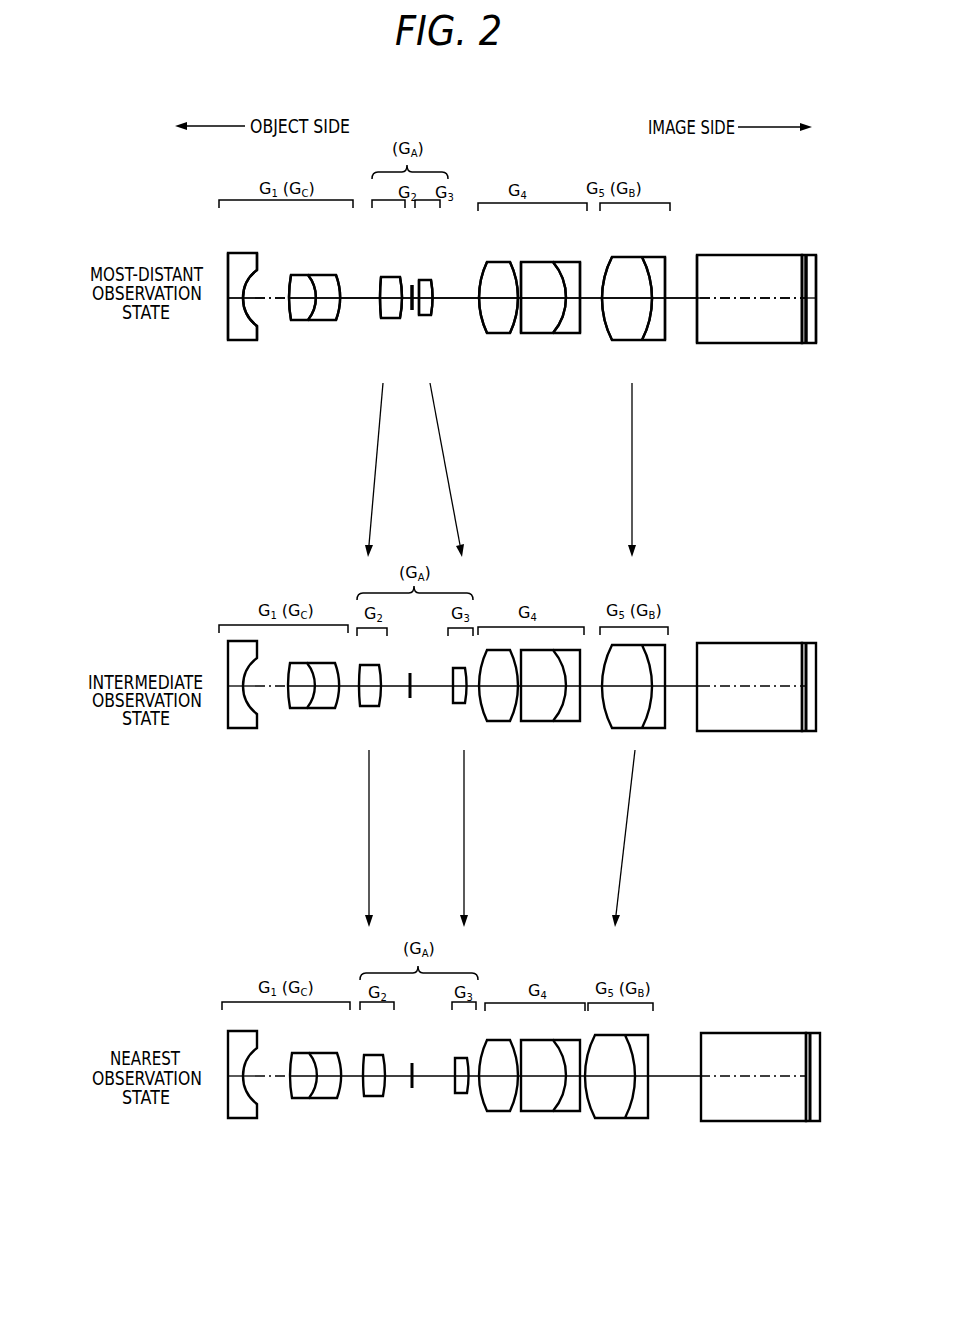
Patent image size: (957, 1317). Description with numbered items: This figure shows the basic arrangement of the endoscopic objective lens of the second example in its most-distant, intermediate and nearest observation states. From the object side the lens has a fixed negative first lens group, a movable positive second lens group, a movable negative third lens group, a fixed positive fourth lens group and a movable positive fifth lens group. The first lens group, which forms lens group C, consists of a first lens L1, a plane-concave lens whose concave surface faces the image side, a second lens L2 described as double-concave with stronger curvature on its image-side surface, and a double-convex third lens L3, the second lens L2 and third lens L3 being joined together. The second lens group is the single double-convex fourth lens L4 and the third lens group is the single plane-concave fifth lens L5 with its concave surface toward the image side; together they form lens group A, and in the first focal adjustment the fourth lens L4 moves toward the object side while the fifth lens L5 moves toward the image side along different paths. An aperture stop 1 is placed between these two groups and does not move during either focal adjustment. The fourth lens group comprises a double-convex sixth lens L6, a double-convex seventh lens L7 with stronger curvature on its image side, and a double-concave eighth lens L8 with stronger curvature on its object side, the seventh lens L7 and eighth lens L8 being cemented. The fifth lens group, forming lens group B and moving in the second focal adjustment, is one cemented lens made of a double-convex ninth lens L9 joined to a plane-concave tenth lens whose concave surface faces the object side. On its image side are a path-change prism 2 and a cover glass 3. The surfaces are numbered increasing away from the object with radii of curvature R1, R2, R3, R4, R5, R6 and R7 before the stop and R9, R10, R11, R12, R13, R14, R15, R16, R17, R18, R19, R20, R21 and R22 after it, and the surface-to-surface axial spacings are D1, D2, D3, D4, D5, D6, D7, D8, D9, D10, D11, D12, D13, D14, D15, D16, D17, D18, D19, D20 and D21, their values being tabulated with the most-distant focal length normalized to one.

The aperture stop 1 is at (412, 312).
The path-change prism 2 is at (750, 345).
The cover glass 3 is at (808, 345).
The first lens L1 is at (243, 342).
The second lens L2 is at (299, 322).
The third lens L3 is at (328, 322).
The fourth lens L4 is at (392, 320).
The fifth lens L5 is at (428, 317).
The sixth lens L6 is at (500, 334).
The seventh lens L7 is at (538, 322).
The eighth lens L8 is at (568, 335).
The ninth lens L9 is at (630, 341).
The radius of curvature of first surface R1 is at (227, 256).
The radius of curvature of second surface R2 is at (258, 262).
The radius of curvature of third surface R3 is at (291, 275).
The radius of curvature of fourth surface R4 is at (309, 274).
The radius of curvature of fifth surface R5 is at (337, 275).
The radius of curvature of sixth surface R6 is at (380, 278).
The radius of curvature of seventh surface R7 is at (401, 277).
The radius of curvature of ninth surface R9 is at (420, 280).
The radius of curvature of tenth surface R10 is at (432, 280).
The radius of curvature of eleventh surface R11 is at (483, 265).
The radius of curvature of twelfth surface R12 is at (514, 268).
The radius of curvature of thirteenth surface R13 is at (523, 266).
The radius of curvature of fourteenth surface R14 is at (556, 264).
The radius of curvature of fifteenth surface R15 is at (580, 266).
The radius of curvature of sixteenth surface R16 is at (609, 262).
The radius of curvature of seventeenth surface R17 is at (644, 260).
The radius of curvature of eighteenth surface R18 is at (665, 262).
The radius of curvature of nineteenth surface R19 is at (697, 256).
The radius of curvature of twentieth surface R20 is at (801, 262).
The radius of curvature of twenty-first surface R21 is at (806, 256).
The radius of curvature of twenty-second surface R22 is at (816, 260).
The first surface-to-surface axial spacing D1 is at (236, 290).
The second surface-to-surface axial spacing D2 is at (255, 302).
The third surface-to-surface axial spacing D3 is at (290, 294).
The fourth surface-to-surface axial spacing D4 is at (338, 310).
The fifth surface-to-surface axial spacing D5 is at (367, 293).
The sixth surface-to-surface axial spacing D6 is at (389, 288).
The seventh surface-to-surface axial spacing D7 is at (405, 302).
The eighth surface-to-surface axial spacing D8 is at (412, 283).
The ninth surface-to-surface axial spacing D9 is at (434, 296).
The tenth surface-to-surface axial spacing D10 is at (472, 302).
The eleventh surface-to-surface axial spacing D11 is at (492, 295).
The twelfth surface-to-surface axial spacing D12 is at (514, 322).
The thirteenth surface-to-surface axial spacing D13 is at (541, 295).
The fourteenth surface-to-surface axial spacing D14 is at (585, 312).
The fifteenth surface-to-surface axial spacing D15 is at (597, 290).
The sixteenth surface-to-surface axial spacing D16 is at (625, 296).
The seventeenth surface-to-surface axial spacing D17 is at (672, 302).
The eighteenth surface-to-surface axial spacing D18 is at (690, 295).
The nineteenth surface-to-surface axial spacing D19 is at (758, 294).
The twentieth surface-to-surface axial spacing D20 is at (798, 294).
The twenty-first surface-to-surface axial spacing D21 is at (812, 306).